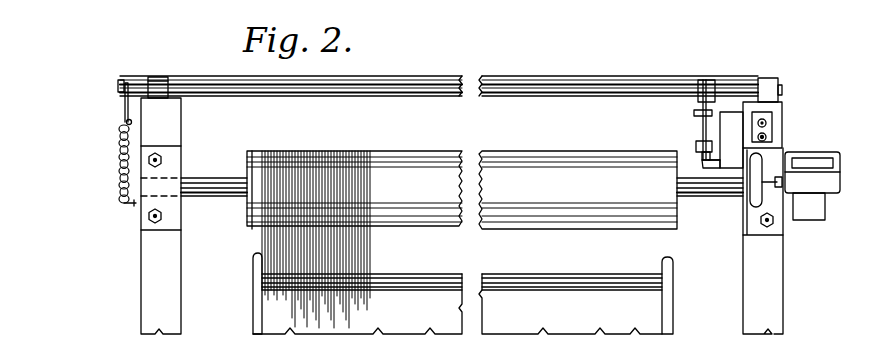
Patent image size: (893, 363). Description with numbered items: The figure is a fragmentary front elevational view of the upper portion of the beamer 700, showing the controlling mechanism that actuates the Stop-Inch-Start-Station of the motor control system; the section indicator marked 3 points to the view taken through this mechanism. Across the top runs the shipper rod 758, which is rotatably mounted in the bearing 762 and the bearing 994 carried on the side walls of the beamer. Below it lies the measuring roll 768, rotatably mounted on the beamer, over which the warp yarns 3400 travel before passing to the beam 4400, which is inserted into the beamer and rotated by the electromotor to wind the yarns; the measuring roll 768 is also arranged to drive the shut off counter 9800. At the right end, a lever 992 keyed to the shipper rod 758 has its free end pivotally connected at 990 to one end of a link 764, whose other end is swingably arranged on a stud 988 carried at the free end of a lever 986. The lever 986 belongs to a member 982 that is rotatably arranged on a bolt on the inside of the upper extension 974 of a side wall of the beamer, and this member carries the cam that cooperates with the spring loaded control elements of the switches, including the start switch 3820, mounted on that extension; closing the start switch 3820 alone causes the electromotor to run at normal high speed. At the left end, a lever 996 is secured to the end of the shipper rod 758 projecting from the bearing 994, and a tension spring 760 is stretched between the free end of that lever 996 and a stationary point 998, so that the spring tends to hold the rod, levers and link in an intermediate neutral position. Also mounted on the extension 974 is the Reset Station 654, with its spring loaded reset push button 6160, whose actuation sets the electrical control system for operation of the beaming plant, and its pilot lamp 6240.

The beamer 700 is at (786, 292).
The shipper rod 758 is at (562, 88).
The tension spring 760 is at (107, 164).
The bearing 762 is at (778, 80).
The link 764 is at (694, 113).
The measuring roll 768 is at (497, 153).
The upper extension of a side wall 974 is at (784, 108).
The member 982 is at (715, 155).
The lever 986 is at (703, 162).
The stud 988 is at (697, 146).
The pivotal connection 990 is at (692, 113).
The lever 992 is at (716, 103).
The bearing 994 is at (157, 77).
The lever 996 is at (108, 104).
The stationary point 998 is at (131, 206).
The Reset Station 654 is at (773, 130).
The warp yarns 3400 is at (337, 243).
The start switch 3820 is at (730, 112).
The beam 4400 is at (500, 276).
The reset push button 6160 is at (766, 137).
The pilot lamp 6240 is at (767, 122).
The shut off counter 9800 is at (838, 168).
The section indicator for FIG. 3 is at (660, 110).